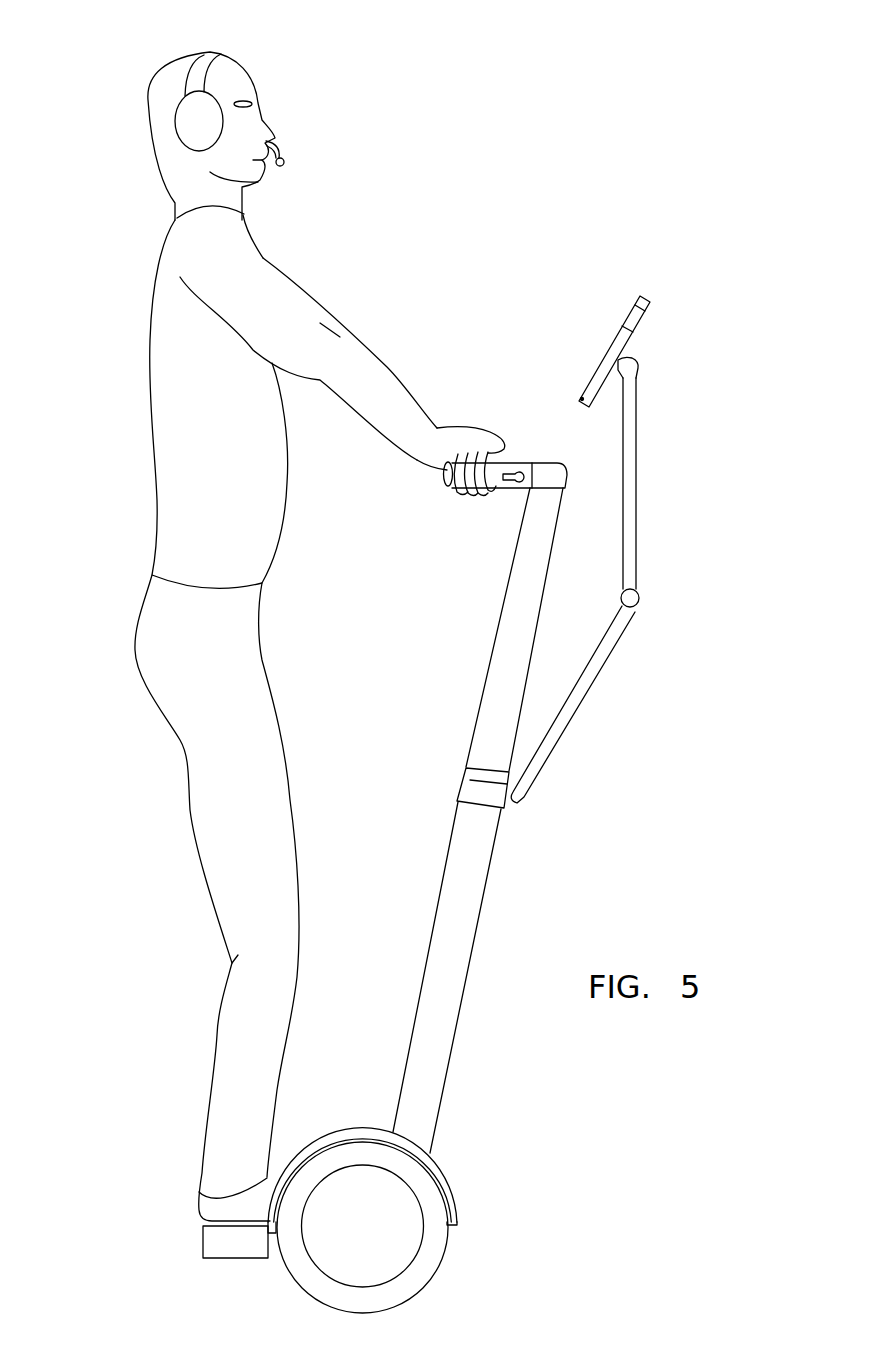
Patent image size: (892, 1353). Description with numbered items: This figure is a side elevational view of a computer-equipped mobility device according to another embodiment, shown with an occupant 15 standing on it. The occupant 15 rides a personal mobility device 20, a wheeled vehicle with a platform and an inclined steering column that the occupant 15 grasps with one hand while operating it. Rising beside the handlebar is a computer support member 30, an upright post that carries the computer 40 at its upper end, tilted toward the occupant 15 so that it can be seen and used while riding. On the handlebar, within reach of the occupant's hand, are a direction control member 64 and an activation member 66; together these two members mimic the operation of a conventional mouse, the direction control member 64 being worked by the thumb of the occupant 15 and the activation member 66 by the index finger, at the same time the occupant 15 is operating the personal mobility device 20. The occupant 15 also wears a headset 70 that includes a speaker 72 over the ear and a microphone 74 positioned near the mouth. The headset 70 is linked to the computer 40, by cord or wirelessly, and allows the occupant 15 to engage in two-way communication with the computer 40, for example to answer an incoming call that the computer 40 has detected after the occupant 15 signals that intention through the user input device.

The occupant 15 is at (193, 472).
The personal mobility device 20 is at (490, 920).
The computer support member 30 is at (642, 558).
The computer 40 is at (633, 333).
The direction control member 64 is at (509, 461).
The activation member 66 is at (518, 482).
The headset 70 is at (193, 80).
The speaker 72 is at (188, 135).
The microphone 74 is at (286, 156).